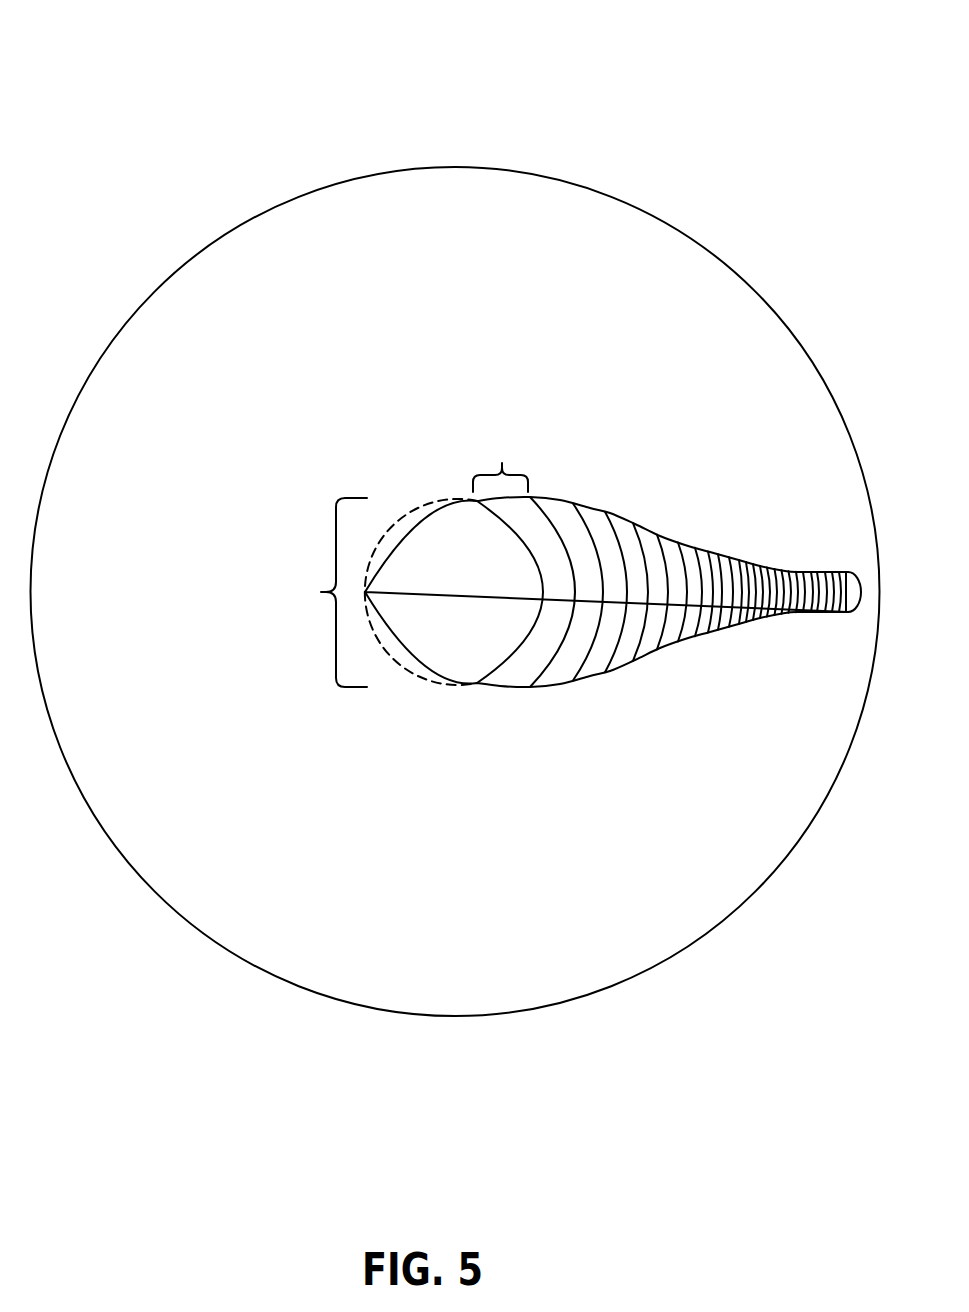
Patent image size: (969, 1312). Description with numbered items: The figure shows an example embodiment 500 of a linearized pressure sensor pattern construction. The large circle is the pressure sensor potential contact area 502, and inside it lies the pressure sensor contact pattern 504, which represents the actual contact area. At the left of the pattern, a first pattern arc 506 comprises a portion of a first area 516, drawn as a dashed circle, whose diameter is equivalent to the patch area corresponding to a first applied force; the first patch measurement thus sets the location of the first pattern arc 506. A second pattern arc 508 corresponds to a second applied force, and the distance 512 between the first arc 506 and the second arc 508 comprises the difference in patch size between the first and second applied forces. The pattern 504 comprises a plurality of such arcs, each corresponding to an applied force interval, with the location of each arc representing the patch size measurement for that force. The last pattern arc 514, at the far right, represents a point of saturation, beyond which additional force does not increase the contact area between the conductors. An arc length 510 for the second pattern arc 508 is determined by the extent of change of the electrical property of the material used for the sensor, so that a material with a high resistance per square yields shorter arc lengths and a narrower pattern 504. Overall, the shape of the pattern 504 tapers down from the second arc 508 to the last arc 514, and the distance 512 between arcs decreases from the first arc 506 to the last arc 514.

The example embodiment 500 is at (123, 51).
The pressure sensor potential contact area 502 is at (580, 183).
The pressure sensor contact pattern 504 is at (590, 505).
The first pattern arc 506 is at (507, 670).
The second pattern arc 508 is at (548, 670).
The arc length 510 is at (317, 592).
The distance 512 is at (500, 460).
The last pattern arc 514 is at (848, 614).
The first area 516 is at (428, 507).